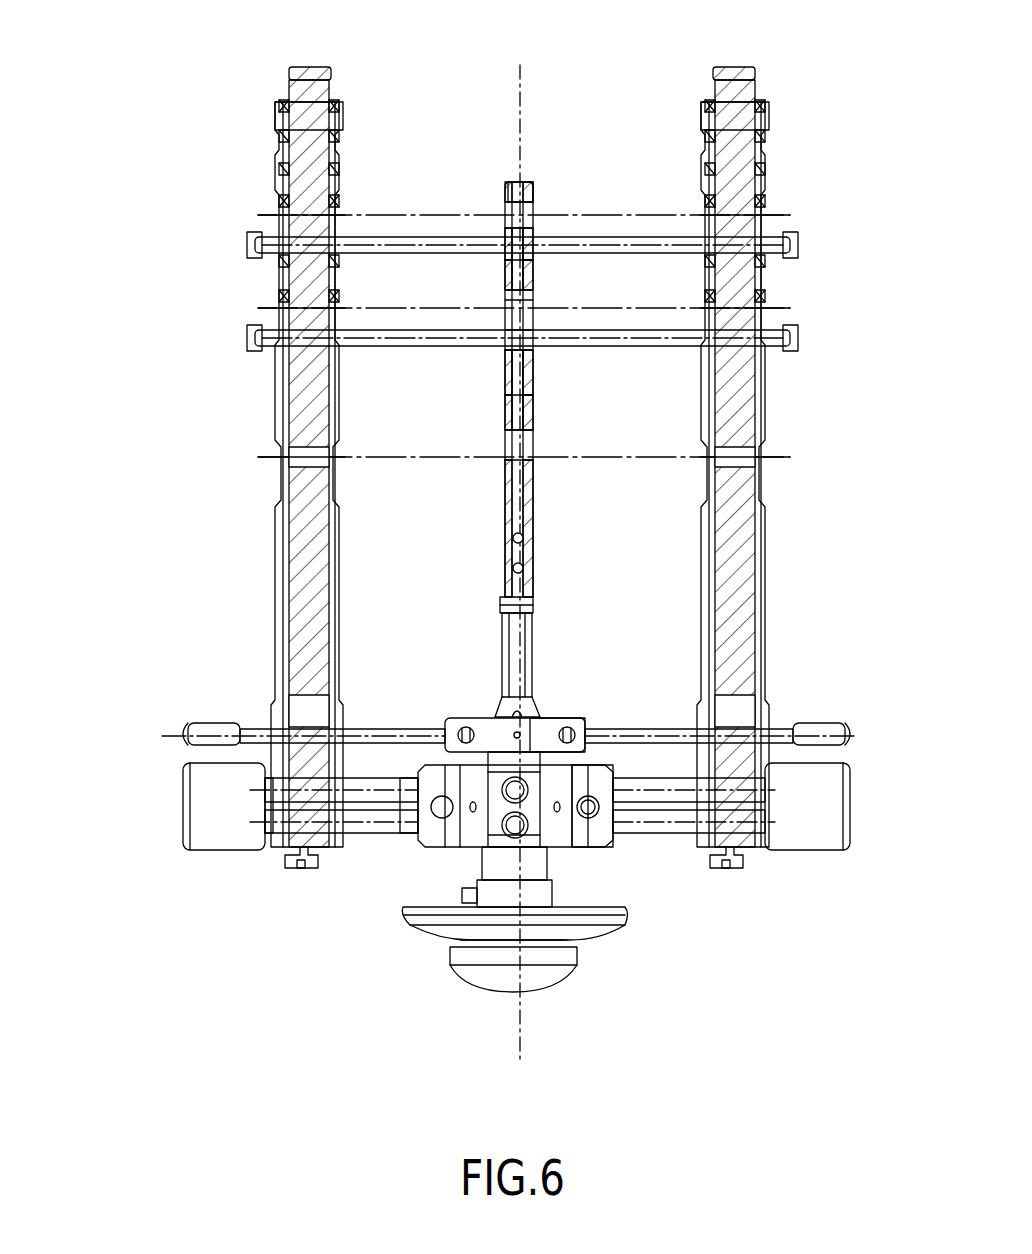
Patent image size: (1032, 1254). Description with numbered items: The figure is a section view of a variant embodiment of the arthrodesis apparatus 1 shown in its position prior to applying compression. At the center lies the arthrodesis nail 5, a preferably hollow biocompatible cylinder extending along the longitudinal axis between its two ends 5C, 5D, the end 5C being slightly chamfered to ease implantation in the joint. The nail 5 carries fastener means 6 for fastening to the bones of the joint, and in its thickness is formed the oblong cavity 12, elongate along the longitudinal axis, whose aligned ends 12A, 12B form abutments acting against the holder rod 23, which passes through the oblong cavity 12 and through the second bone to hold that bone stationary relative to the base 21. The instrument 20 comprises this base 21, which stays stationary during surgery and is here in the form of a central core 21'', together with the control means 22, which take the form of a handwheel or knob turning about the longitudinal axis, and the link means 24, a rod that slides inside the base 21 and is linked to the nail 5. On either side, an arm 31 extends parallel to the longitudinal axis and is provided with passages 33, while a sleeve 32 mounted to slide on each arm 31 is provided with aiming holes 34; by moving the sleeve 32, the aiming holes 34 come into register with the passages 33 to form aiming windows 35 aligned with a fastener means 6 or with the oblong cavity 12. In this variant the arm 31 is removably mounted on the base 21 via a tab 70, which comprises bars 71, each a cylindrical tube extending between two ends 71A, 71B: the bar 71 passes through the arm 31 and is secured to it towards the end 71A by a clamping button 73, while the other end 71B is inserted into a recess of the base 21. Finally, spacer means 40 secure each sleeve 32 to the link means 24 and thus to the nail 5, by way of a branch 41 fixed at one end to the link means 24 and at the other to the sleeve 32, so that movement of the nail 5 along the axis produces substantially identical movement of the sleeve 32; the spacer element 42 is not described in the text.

The arthrodesis apparatus 1 is at (213, 606).
The arthrodesis nail 5 is at (503, 520).
The end of the nail 5C is at (512, 182).
The end of the nail 5D is at (533, 600).
The fastener means 6 is at (532, 196).
The oblong cavity 12 is at (512, 268).
The end of the oblong cavity 12A is at (535, 228).
The end of the oblong cavity 12B is at (533, 278).
The instrument 20 is at (644, 985).
The base 21 is at (540, 836).
The central core 21'' is at (597, 829).
The control means 22 is at (456, 985).
The holder rod 23 is at (420, 236).
The link means 24 is at (532, 657).
The arm 31 is at (306, 66).
The sleeve 32 is at (279, 105).
The passages 33 is at (316, 105).
The aiming holes 34 is at (280, 180).
The aiming windows 35 is at (266, 215).
The spacer means 40 is at (465, 716).
The branch 41 is at (360, 724).
The clamp arm 42 is at (547, 727).
The tab 70 is at (205, 855).
The bar 71 is at (366, 826).
The end of the bar 71A is at (270, 842).
The end of the bar 71B is at (410, 830).
The clamping button 73 is at (300, 868).